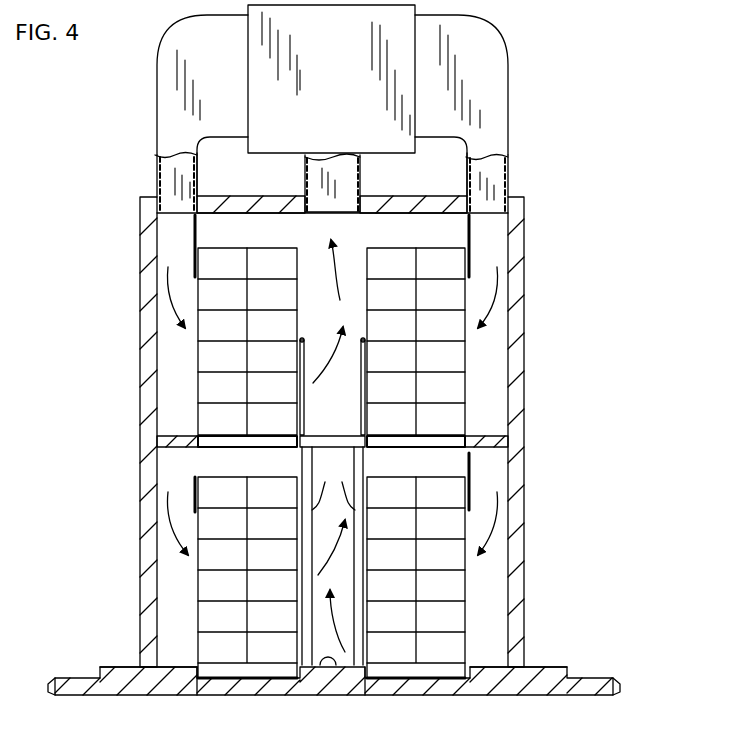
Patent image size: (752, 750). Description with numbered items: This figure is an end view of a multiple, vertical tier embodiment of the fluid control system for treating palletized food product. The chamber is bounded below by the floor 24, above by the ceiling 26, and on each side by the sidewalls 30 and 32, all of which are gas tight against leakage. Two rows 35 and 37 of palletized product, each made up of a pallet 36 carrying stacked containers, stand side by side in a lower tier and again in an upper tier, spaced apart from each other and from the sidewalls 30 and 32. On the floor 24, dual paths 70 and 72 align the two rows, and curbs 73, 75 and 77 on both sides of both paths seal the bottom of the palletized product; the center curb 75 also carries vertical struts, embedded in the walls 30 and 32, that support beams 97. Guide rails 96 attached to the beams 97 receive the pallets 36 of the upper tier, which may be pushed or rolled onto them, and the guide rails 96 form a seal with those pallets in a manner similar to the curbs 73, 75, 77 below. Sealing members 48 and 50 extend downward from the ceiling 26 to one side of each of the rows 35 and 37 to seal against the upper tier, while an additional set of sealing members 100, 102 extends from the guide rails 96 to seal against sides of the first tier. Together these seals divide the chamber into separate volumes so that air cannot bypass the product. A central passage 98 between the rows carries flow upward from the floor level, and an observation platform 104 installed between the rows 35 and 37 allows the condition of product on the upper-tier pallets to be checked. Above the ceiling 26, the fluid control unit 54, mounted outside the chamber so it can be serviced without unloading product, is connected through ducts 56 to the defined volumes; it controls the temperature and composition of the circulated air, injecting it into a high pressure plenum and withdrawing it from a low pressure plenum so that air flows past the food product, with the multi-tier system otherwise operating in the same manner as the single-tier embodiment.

The floor 24 is at (508, 690).
The ceiling 26 is at (425, 196).
The sidewall 30 is at (140, 340).
The sidewall 32 is at (525, 305).
The row 35 is at (225, 247).
The pallet 36 is at (250, 672).
The row 37 is at (437, 247).
The sealing member 48 is at (195, 223).
The sealing member 50 is at (472, 225).
The fluid control unit 54 is at (348, 53).
The duct 56 is at (157, 112).
The path 70 is at (195, 690).
The path 72 is at (370, 665).
The curb 73 is at (172, 665).
The center curb 75 is at (335, 690).
The curb 77 is at (498, 665).
The guide rail 96 is at (198, 437).
The beam 97 is at (165, 437).
The central channel 98 is at (332, 556).
The sealing member 100 is at (193, 463).
The sealing member 102 is at (470, 462).
The observation platform 104 is at (360, 340).